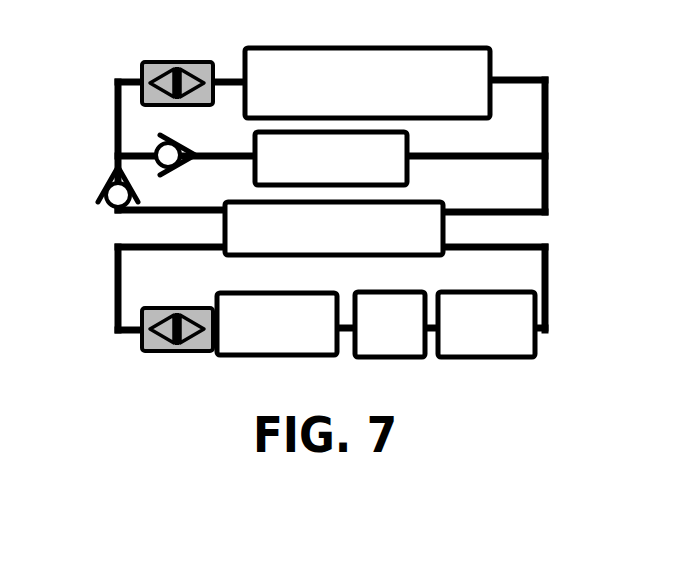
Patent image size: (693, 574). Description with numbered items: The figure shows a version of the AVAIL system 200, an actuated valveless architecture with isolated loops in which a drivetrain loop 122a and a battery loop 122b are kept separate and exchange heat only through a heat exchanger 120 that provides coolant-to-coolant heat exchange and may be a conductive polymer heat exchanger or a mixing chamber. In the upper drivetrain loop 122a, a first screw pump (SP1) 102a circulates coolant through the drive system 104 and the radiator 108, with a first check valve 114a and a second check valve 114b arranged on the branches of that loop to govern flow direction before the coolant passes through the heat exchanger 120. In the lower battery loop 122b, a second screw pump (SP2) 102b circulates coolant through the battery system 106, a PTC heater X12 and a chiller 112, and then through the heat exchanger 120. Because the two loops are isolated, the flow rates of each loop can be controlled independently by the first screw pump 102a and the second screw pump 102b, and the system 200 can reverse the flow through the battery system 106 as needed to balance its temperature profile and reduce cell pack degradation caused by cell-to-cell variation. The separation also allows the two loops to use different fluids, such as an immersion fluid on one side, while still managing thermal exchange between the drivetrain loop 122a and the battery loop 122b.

The AVAIL system 200 is at (503, 25).
The first screw pump (SP1) 102a is at (177, 72).
The second screw pump (SP2) 102b is at (177, 347).
The drive system 104 is at (367, 83).
The battery system 106 is at (277, 324).
The radiator 108 is at (331, 158).
The chiller 112 is at (486, 324).
The PTC heater X12 is at (390, 324).
The first check valve 114a is at (149, 187).
The second check valve 114b is at (177, 144).
The heat exchanger 120 is at (334, 228).
The drivetrain loop 122a is at (568, 33).
The battery loop 122b is at (568, 245).